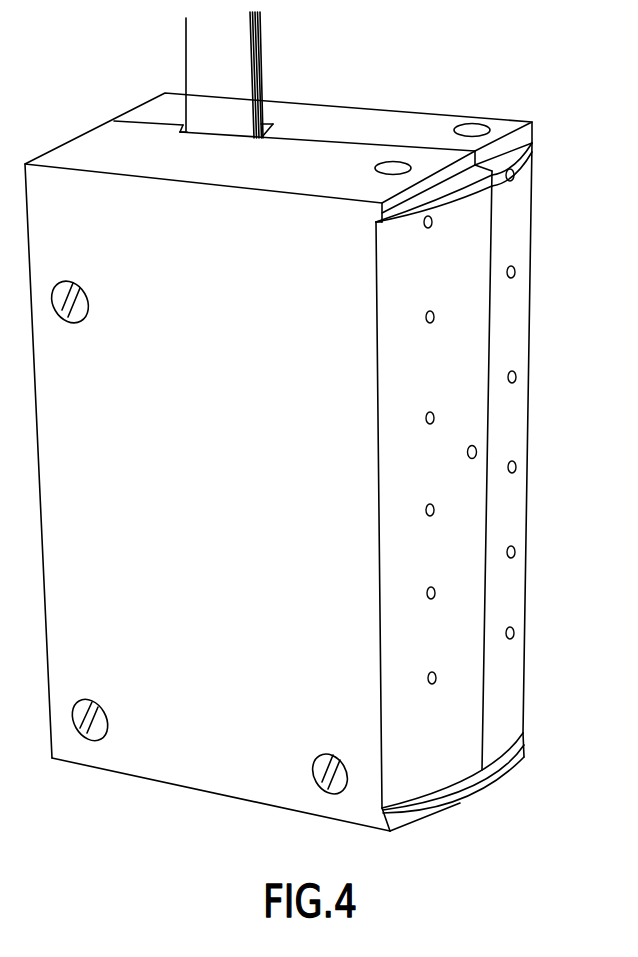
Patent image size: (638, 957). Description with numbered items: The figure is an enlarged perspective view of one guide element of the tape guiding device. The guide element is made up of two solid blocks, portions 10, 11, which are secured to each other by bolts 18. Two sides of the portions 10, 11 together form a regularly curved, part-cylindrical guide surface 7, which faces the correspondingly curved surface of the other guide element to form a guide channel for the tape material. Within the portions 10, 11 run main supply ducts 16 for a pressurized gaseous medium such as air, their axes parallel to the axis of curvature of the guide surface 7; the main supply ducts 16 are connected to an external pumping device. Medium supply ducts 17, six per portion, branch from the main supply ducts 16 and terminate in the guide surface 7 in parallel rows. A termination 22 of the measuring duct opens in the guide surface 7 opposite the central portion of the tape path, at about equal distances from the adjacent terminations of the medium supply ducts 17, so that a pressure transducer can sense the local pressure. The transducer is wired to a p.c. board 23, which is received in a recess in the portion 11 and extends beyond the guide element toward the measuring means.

The guide surface 7 is at (452, 757).
The portion 10 is at (268, 180).
The portion 11 is at (363, 117).
The main supply duct 16 is at (397, 167).
The medium supply duct 17 is at (430, 324).
The bolt 18 is at (98, 731).
The termination 22 is at (477, 452).
The p.c. board 23 is at (223, 57).